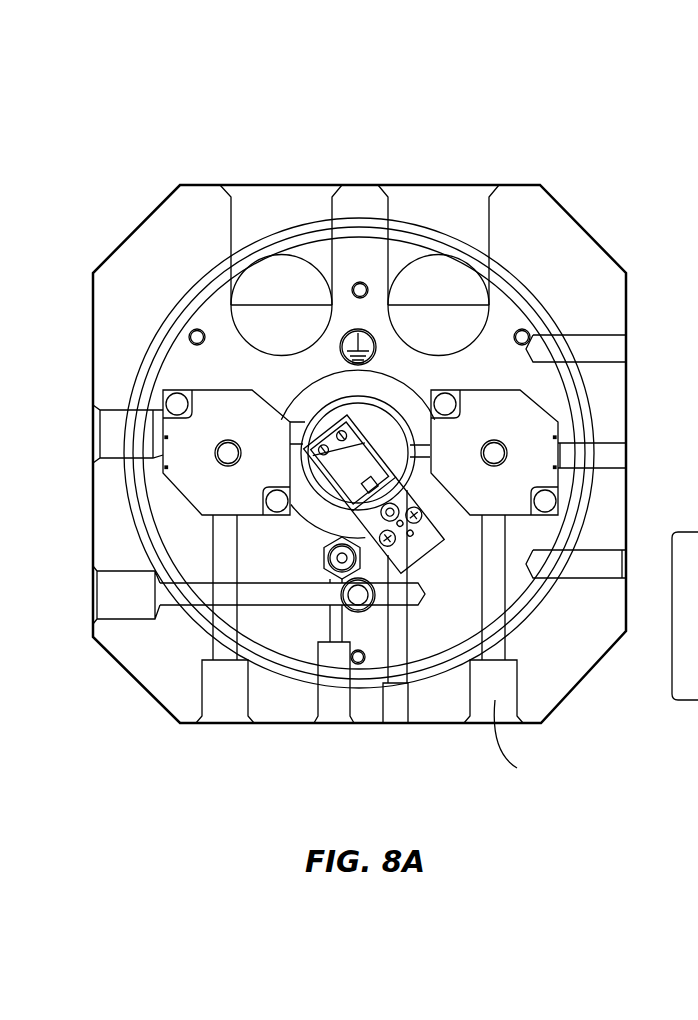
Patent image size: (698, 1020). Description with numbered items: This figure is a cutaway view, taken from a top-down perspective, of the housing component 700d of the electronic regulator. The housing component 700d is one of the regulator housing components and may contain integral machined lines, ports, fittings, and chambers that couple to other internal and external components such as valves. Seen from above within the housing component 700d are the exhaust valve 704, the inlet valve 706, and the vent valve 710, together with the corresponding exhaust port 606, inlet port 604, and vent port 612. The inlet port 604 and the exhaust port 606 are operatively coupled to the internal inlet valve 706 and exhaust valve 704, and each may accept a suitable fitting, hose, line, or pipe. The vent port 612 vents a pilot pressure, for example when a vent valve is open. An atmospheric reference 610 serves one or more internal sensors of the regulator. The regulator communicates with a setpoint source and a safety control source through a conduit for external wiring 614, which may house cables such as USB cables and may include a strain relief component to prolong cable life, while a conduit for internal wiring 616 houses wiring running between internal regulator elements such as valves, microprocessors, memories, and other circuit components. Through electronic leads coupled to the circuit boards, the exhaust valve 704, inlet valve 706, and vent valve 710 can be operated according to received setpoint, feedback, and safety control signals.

The inlet port 604 is at (223, 703).
The exhaust port 606 is at (512, 647).
The atmospheric reference 610 is at (337, 702).
The venting port 612 is at (398, 703).
The conduit for external wiring 614 is at (449, 215).
The conduit for internal wiring 616 is at (280, 213).
The housing component 700d is at (550, 242).
The exhaust valve 704 is at (513, 418).
The inlet valve 706 is at (163, 420).
The vent valve 710 is at (351, 482).